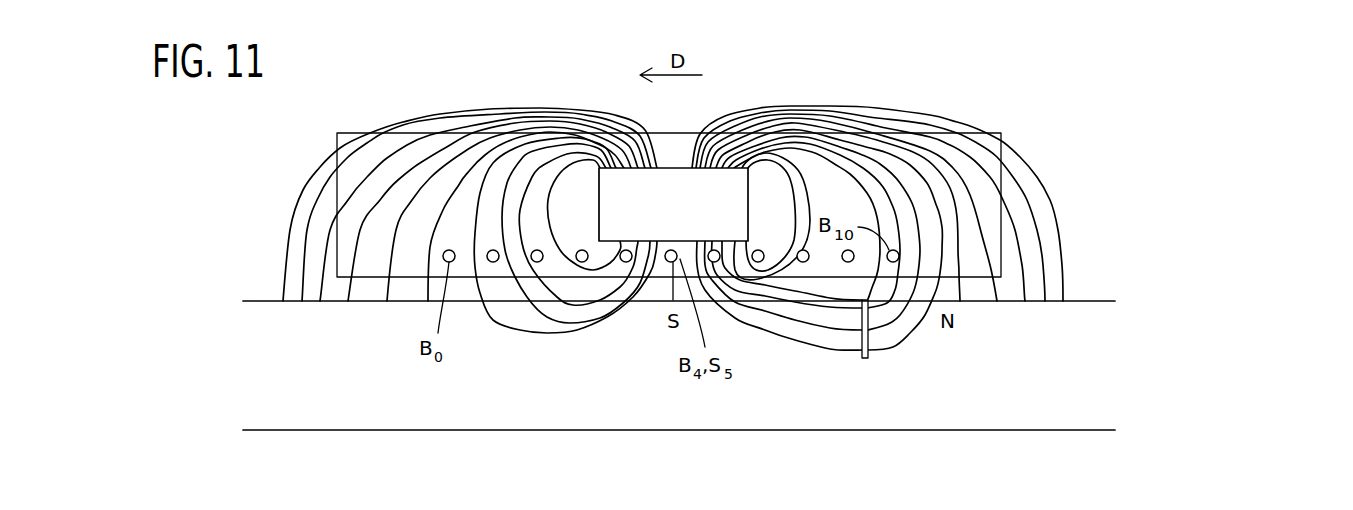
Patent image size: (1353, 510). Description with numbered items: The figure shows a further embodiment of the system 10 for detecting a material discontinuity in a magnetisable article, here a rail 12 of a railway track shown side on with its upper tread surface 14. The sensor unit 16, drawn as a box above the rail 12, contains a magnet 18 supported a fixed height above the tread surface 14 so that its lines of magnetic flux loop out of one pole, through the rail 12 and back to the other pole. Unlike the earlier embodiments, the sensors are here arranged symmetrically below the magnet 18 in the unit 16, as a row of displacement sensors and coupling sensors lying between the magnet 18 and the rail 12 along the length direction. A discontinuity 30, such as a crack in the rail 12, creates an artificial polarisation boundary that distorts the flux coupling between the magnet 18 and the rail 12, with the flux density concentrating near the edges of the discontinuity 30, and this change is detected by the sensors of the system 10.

The system 10 is at (837, 81).
The rail 12 is at (369, 379).
The tread surface 14 is at (1083, 301).
The sensor unit 16 is at (1001, 133).
The magnet 18 is at (668, 168).
The material discontinuity 30 is at (866, 358).